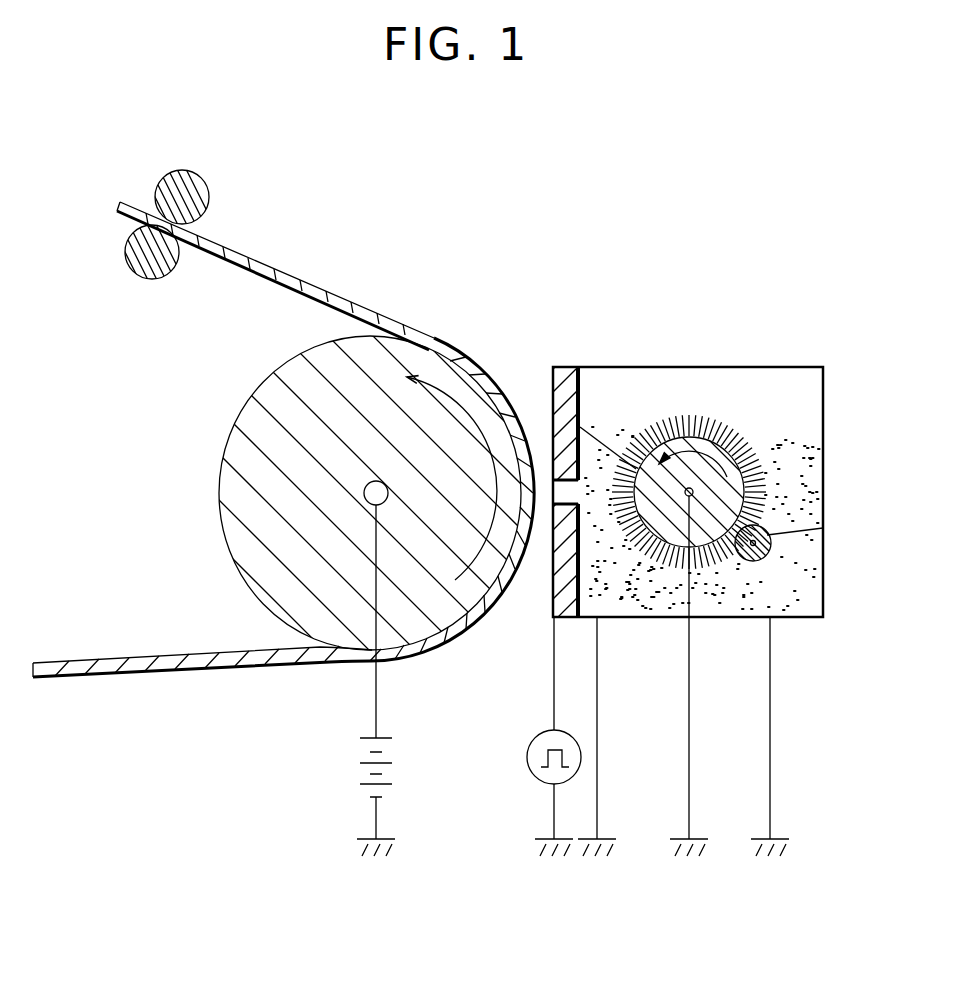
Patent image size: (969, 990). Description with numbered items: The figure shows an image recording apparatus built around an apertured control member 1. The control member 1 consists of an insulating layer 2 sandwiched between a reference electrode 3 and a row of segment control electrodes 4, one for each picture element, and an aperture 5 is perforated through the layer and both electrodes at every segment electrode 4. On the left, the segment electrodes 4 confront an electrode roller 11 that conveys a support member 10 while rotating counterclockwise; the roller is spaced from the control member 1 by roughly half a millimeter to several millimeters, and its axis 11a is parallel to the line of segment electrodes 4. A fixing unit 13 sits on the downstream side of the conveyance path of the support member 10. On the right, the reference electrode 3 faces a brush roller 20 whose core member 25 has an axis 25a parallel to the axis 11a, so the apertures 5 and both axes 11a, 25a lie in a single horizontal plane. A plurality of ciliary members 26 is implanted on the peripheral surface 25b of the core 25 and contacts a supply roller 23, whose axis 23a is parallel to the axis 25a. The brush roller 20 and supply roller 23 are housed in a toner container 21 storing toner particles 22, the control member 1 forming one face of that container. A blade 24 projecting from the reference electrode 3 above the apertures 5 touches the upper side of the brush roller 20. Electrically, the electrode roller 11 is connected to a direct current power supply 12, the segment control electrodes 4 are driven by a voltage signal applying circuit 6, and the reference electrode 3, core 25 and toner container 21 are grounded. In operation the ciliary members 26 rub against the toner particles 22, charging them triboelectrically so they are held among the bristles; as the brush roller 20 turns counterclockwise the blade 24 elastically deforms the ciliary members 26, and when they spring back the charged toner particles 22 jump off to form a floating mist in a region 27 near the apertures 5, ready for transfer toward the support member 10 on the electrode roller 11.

The control member 1 is at (548, 355).
The insulating layer 2 is at (568, 608).
The reference electrode 3 is at (583, 600).
The segment control electrodes 4 is at (552, 617).
The apertures 5 is at (548, 497).
The voltage signal applying circuit 6 is at (527, 757).
The support member 10 is at (277, 265).
The electrode roller 11 is at (233, 437).
The axis of electrode roller 11a is at (373, 483).
The direct current power supply 12 is at (360, 783).
The fixing unit 13 is at (182, 175).
The brush roller 20 is at (685, 575).
The toner container 21 is at (823, 545).
The toner particles 22 is at (814, 482).
The supply roller 23 is at (765, 560).
The axis of supply roller 23a is at (823, 528).
The blade 24 is at (607, 448).
The core member 25 is at (693, 462).
The axis of core 25a is at (691, 497).
The peripheral surface 25b is at (715, 435).
The ciliary members 26 is at (735, 428).
The region 27 is at (618, 452).